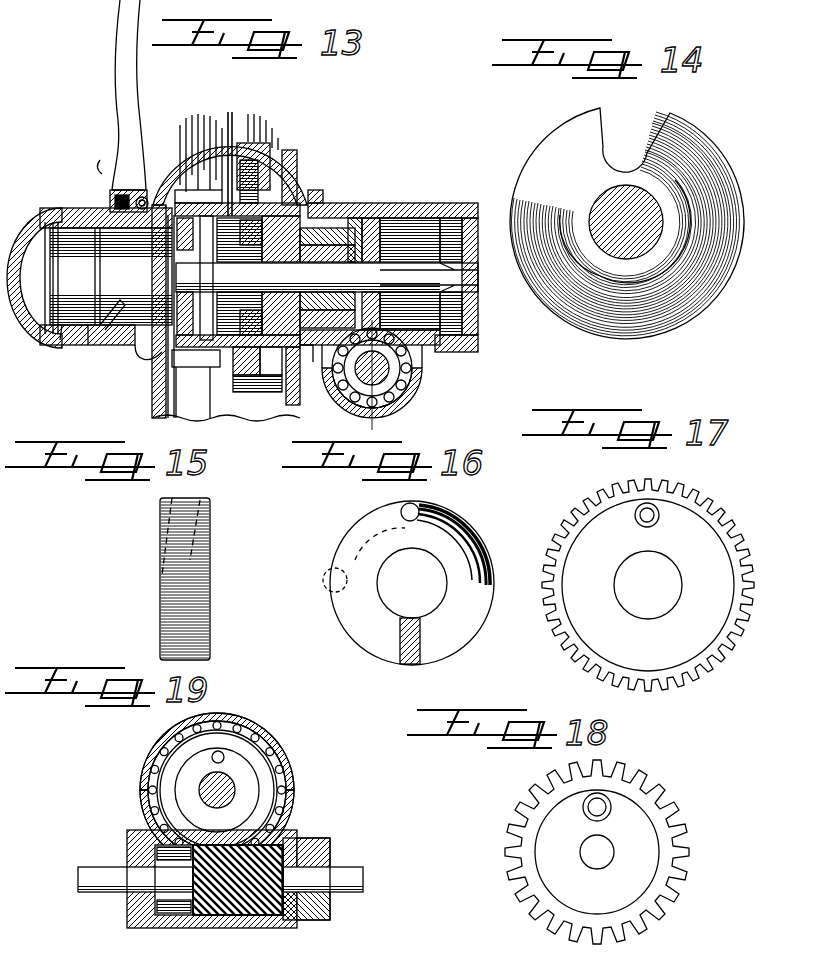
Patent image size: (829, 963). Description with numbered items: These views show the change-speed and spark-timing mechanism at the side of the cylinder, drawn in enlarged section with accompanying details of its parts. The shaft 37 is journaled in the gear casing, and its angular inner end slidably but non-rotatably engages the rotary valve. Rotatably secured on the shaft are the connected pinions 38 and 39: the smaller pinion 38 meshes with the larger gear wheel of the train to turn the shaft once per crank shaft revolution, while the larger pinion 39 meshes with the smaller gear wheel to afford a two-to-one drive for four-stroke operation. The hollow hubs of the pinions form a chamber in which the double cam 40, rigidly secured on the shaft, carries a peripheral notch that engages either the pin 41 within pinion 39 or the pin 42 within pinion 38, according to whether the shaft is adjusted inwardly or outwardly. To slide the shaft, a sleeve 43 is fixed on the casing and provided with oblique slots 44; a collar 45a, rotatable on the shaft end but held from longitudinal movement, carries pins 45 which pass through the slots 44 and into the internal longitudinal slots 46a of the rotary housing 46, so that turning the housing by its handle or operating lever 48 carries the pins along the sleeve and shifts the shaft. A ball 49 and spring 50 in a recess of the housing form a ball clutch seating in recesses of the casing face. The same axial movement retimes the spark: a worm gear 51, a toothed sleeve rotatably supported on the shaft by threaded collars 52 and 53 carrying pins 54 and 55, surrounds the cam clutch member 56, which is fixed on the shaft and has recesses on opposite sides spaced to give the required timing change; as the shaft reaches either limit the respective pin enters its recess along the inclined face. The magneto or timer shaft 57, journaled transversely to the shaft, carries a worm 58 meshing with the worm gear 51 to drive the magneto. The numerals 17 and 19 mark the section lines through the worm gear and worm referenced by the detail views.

In FIG. 13, the section line 17 is at (400, 222).
In FIG. 13, the section line 19 is at (320, 178).
In FIG. 13, the shaft 37 is at (408, 288).
In FIG. 14, the shaft 37 is at (660, 210).
In FIG. 19, the shaft 37 is at (200, 788).
In FIG. 13, the pinion 38 is at (186, 190).
In FIG. 18, the pinion 38 is at (655, 792).
In FIG. 13, the pinion 39 is at (266, 156).
In FIG. 13, the double cam 40 is at (142, 333).
In FIG. 14, the double cam 40 is at (722, 240).
In FIG. 13, the pin 41 is at (290, 182).
In FIG. 13, the pin 42 is at (184, 236).
In FIG. 18, the pin 42 is at (585, 804).
In FIG. 13, the sleeve 43 is at (44, 236).
In FIG. 13, the slots 44 is at (97, 226).
In FIG. 13, the pins 45 is at (56, 226).
In FIG. 13, the collar 45a is at (60, 332).
In FIG. 13, the rotary housing 46 is at (42, 318).
In FIG. 13, the internal longitudinal slots 46a is at (88, 346).
In FIG. 13, the handle or operating lever 48 is at (118, 165).
In FIG. 13, the ball 49 is at (137, 195).
In FIG. 13, the spring 50 is at (140, 200).
In FIG. 13, the worm gear 51 is at (426, 214).
In FIG. 17, the worm gear 51 is at (725, 512).
In FIG. 19, the worm gear 51 is at (280, 760).
In FIG. 13, the threaded collar 52 is at (470, 210).
In FIG. 19, the threaded collar 52 is at (258, 786).
In FIG. 13, the threaded collar 53 is at (352, 226).
In FIG. 13, the pin 54 is at (450, 266).
In FIG. 13, the pin 55 is at (373, 222).
In FIG. 17, the pin 55 is at (650, 508).
In FIG. 13, the cam clutch member 56 is at (240, 357).
In FIG. 15, the cam clutch member 56 is at (210, 605).
In FIG. 16, the cam clutch member 56 is at (450, 558).
In FIG. 13, the magneto or timer shaft 57 is at (325, 415).
In FIG. 19, the magneto or timer shaft 57 is at (352, 864).
In FIG. 13, the worm 58 is at (423, 361).
In FIG. 19, the worm 58 is at (205, 918).